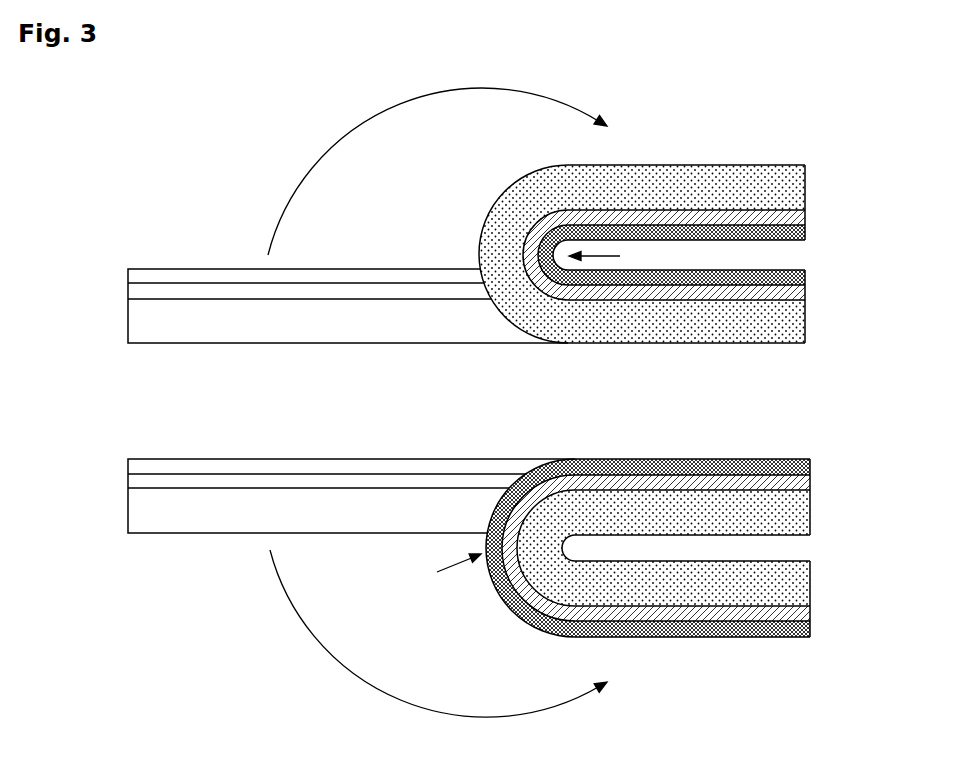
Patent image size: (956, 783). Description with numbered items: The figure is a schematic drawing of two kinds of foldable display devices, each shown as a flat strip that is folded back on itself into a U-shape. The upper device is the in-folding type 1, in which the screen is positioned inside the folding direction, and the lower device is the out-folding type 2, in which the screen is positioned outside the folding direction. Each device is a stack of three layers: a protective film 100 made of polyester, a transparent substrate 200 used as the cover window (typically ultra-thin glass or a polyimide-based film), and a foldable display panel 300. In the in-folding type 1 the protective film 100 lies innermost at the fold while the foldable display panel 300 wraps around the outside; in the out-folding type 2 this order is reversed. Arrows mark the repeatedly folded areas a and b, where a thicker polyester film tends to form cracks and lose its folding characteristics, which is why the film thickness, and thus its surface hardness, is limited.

The protective film 100 is at (805, 236).
The transparent substrate 200 is at (805, 213).
The foldable display panel 300 is at (805, 180).
The in-folding type 1 is at (156, 214).
The out-folding type 2 is at (158, 410).
The repeatedly folded area a is at (603, 256).
The repeatedly folded area b is at (451, 569).